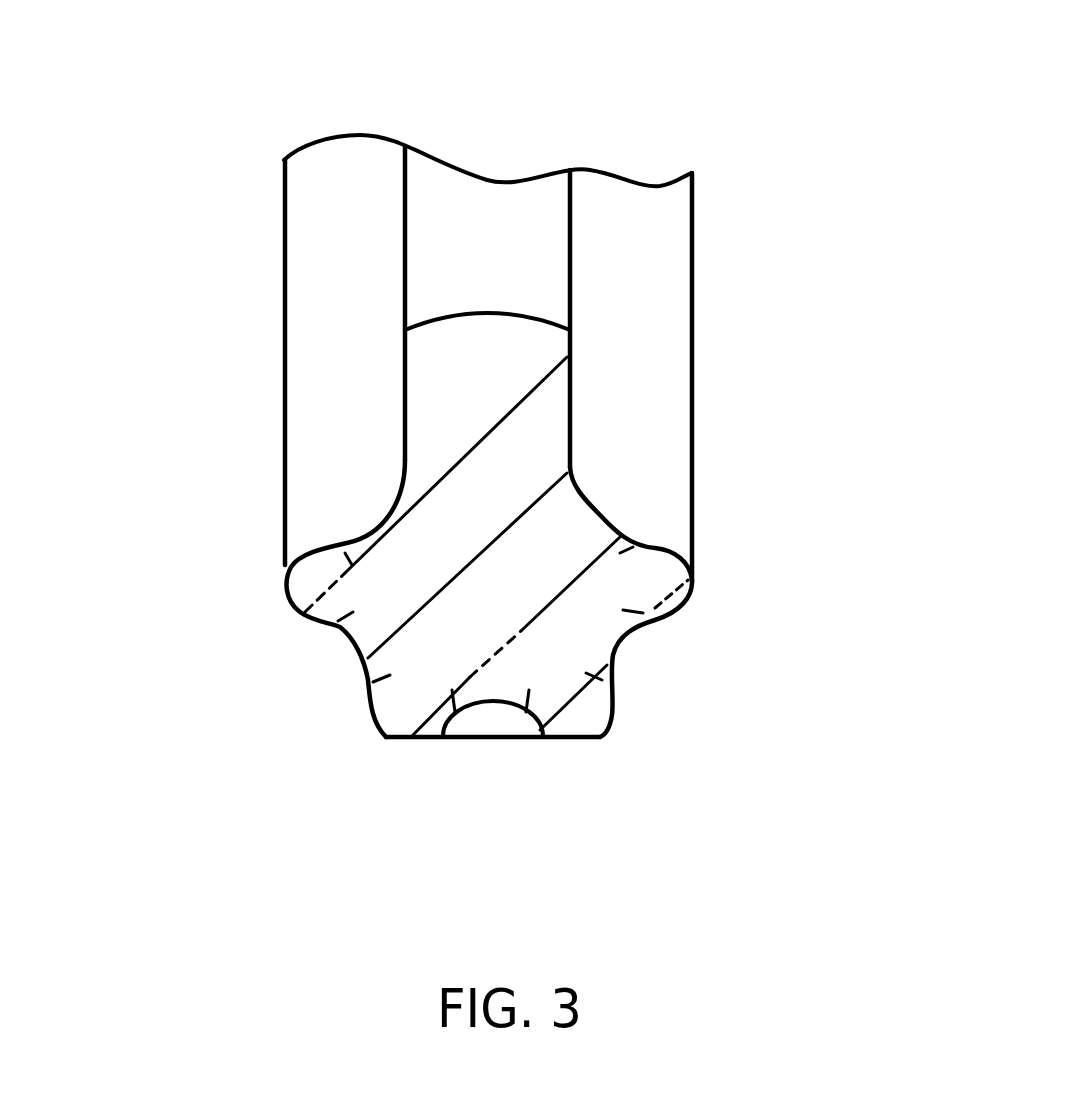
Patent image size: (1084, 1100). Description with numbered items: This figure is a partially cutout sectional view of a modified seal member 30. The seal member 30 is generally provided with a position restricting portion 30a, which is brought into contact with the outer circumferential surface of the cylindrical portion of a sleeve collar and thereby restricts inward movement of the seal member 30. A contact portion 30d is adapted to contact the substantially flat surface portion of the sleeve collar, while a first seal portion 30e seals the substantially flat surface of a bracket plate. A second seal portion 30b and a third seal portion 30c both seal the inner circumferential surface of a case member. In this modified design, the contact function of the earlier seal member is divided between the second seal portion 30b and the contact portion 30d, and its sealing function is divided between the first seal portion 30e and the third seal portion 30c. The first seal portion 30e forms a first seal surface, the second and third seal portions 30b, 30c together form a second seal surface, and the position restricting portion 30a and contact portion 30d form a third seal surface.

The seal member 30 is at (808, 305).
The position restricting portion 30a is at (412, 397).
The second seal portion 30b is at (598, 740).
The third seal portion 30c is at (387, 740).
The contact portion 30d is at (702, 602).
The first seal portion 30e is at (290, 588).